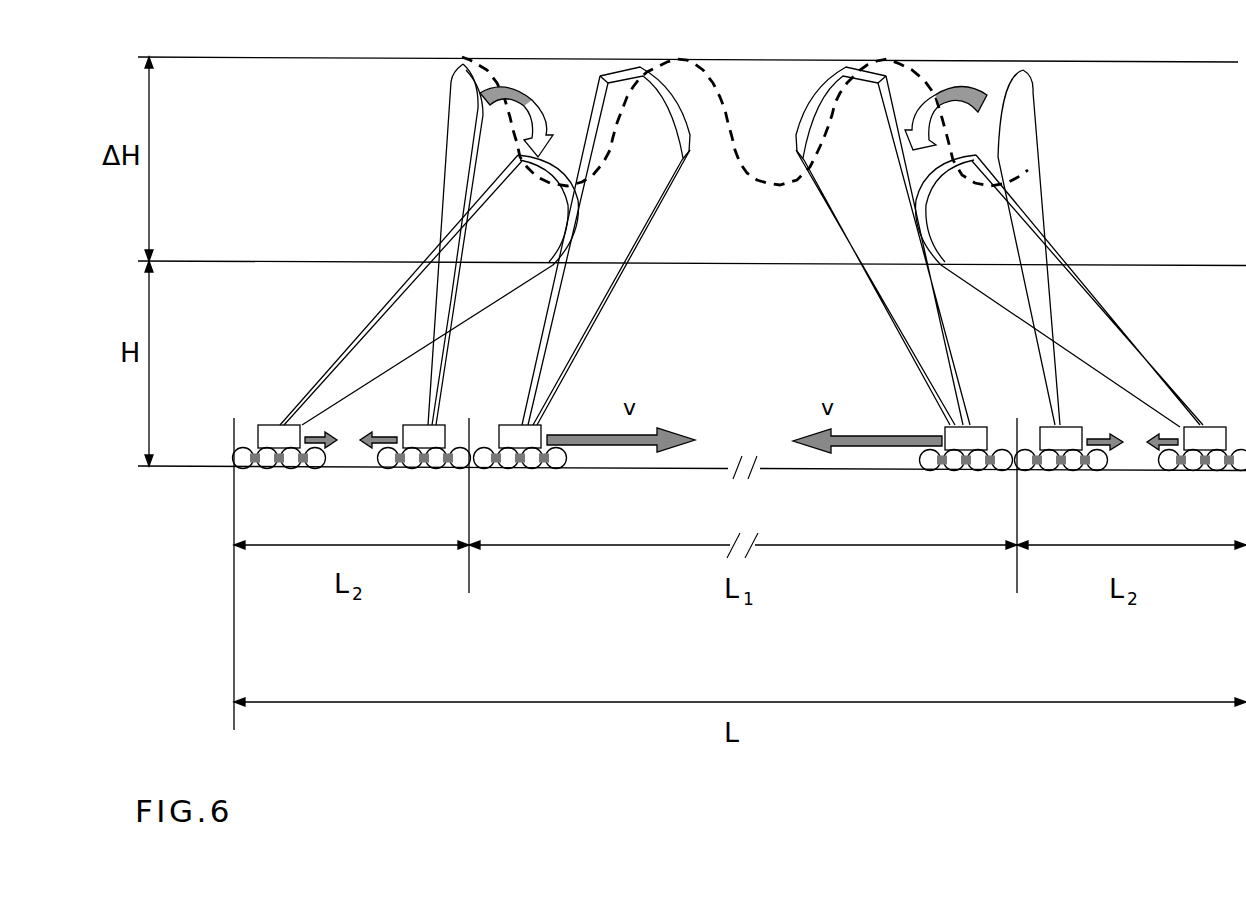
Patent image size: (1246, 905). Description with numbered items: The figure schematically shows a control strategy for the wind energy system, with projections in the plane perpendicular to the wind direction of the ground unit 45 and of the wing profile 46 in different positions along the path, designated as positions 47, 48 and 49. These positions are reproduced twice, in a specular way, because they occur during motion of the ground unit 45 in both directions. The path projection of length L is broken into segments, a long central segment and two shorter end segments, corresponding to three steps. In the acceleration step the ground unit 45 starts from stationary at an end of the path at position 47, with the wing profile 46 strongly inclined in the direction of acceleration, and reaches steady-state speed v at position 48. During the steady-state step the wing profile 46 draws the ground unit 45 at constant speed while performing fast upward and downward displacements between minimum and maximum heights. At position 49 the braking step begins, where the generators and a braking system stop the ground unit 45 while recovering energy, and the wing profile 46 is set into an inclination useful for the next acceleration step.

The ground unit 45 is at (725, 291).
The wing profile 46 is at (746, 246).
The start position 47 is at (740, 470).
The steady-state speed position 48 is at (743, 470).
The braking position 49 is at (743, 470).